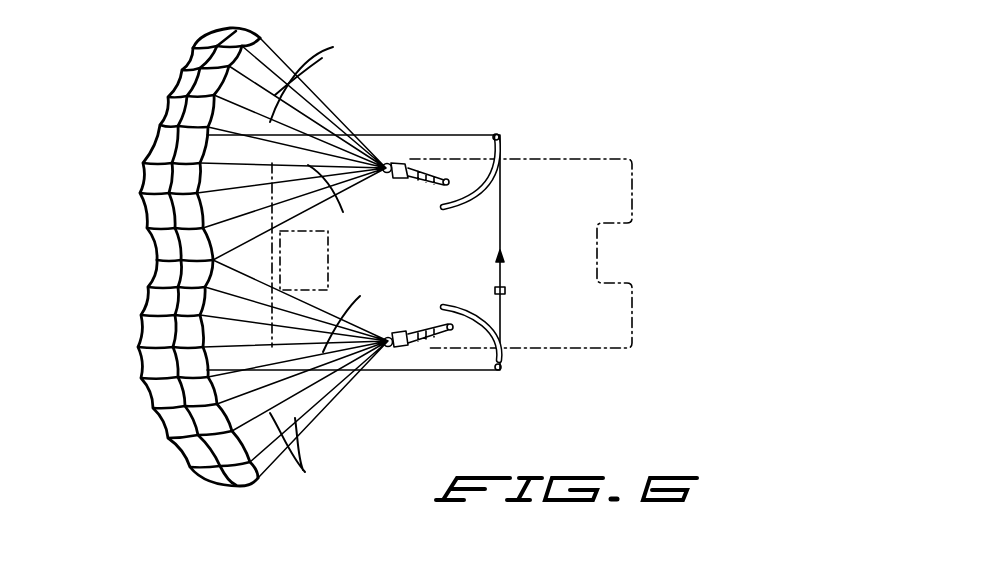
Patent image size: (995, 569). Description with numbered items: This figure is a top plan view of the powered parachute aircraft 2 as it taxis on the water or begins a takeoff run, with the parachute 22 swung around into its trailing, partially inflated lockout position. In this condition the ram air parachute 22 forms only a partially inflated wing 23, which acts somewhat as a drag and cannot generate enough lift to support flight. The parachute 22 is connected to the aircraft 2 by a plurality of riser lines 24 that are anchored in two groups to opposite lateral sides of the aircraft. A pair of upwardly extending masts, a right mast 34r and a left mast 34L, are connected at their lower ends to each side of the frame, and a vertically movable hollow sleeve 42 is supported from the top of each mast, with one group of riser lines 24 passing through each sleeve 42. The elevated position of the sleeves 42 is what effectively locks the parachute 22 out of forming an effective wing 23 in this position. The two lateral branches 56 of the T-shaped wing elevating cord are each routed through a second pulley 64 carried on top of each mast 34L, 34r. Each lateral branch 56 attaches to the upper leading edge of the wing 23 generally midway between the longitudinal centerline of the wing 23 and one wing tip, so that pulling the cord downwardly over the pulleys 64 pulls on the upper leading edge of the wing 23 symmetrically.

The aircraft 2 is at (641, 143).
The ram air parachute 22 is at (140, 337).
The wing 23 is at (139, 143).
The riser lines 24 is at (292, 263).
The left mast 34L is at (495, 180).
The right mast 34r is at (490, 325).
The sleeve 42 is at (398, 178).
The lateral branches 56 is at (410, 135).
The second pulley 64 is at (499, 135).